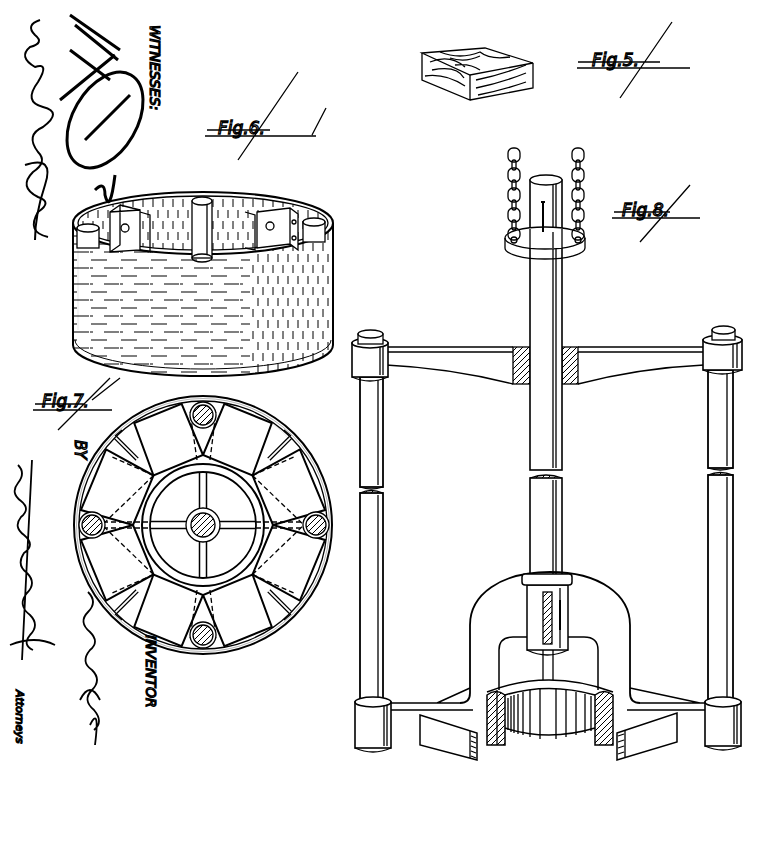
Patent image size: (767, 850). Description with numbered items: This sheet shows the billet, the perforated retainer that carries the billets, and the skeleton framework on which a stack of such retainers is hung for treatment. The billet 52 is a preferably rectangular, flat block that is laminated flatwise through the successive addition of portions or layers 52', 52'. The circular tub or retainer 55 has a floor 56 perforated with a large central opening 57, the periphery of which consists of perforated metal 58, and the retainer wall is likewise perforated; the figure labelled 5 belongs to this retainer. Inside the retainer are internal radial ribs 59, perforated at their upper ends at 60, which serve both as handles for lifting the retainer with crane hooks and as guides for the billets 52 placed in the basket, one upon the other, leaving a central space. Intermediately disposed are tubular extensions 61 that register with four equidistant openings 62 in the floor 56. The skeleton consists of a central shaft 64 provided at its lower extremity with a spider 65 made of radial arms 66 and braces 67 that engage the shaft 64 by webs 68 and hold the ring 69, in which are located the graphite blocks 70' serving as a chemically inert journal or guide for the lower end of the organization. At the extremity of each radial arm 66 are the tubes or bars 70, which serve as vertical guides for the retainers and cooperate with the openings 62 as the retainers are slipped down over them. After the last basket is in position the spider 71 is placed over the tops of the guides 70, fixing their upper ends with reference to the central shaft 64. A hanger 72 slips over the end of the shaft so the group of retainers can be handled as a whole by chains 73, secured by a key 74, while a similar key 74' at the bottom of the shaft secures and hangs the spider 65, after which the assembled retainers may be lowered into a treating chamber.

In FIG. 7, the casing rim 5 is at (283, 432).
In FIG. 5, the billet 52 is at (477, 82).
In FIG. 7, the billet 52 is at (203, 524).
In FIG. 5, the layer 52' is at (398, 72).
In FIG. 6, the retainer 55 is at (219, 285).
In FIG. 7, the retainer 55 is at (203, 536).
In FIG. 7, the floor 56 is at (102, 608).
In FIG. 7, the central opening 57 is at (203, 525).
In FIG. 6, the perforated metal 58 is at (74, 320).
In FIG. 6, the internal radial rib 59 is at (155, 225).
In FIG. 7, the internal radial rib 59 is at (256, 464).
In FIG. 6, the opening 60 is at (120, 242).
In FIG. 6, the tubular extension 61 is at (322, 222).
In FIG. 7, the tubular extension 61 is at (214, 420).
In FIG. 7, the opening 62 is at (197, 406).
In FIG. 7, the central shaft 64 is at (212, 523).
In FIG. 8, the central shaft 64 is at (532, 303).
In FIG. 8, the spider 65 is at (548, 641).
In FIG. 8, the radial arm 66 is at (462, 718).
In FIG. 8, the brace 67 is at (627, 745).
In FIG. 8, the web 68 is at (527, 627).
In FIG. 8, the ring 69 is at (603, 748).
In FIG. 8, the tube 70 is at (547, 539).
In FIG. 8, the graphite block 70' is at (550, 732).
In FIG. 8, the spider 71 is at (620, 358).
In FIG. 8, the hanger 72 is at (558, 257).
In FIG. 8, the chain 73 is at (507, 187).
In FIG. 8, the key 74 is at (505, 221).
In FIG. 8, the key 74' is at (592, 606).